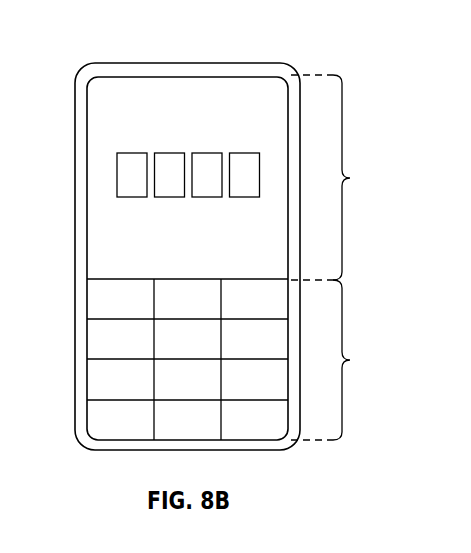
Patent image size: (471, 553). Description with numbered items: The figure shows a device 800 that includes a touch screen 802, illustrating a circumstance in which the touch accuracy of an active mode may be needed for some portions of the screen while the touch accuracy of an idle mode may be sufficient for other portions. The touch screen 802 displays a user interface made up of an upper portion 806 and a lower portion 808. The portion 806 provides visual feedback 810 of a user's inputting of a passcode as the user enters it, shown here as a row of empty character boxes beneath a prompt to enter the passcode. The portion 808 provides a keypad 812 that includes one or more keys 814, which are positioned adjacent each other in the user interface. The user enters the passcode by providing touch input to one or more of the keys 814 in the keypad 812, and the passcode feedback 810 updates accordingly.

The device 800 is at (296, 72).
The touch screen 802 is at (188, 76).
The portion 806 is at (341, 177).
The portion 808 is at (341, 360).
The visual feedback 810 is at (260, 203).
The keypad 812 is at (250, 432).
The keys 814 is at (100, 386).